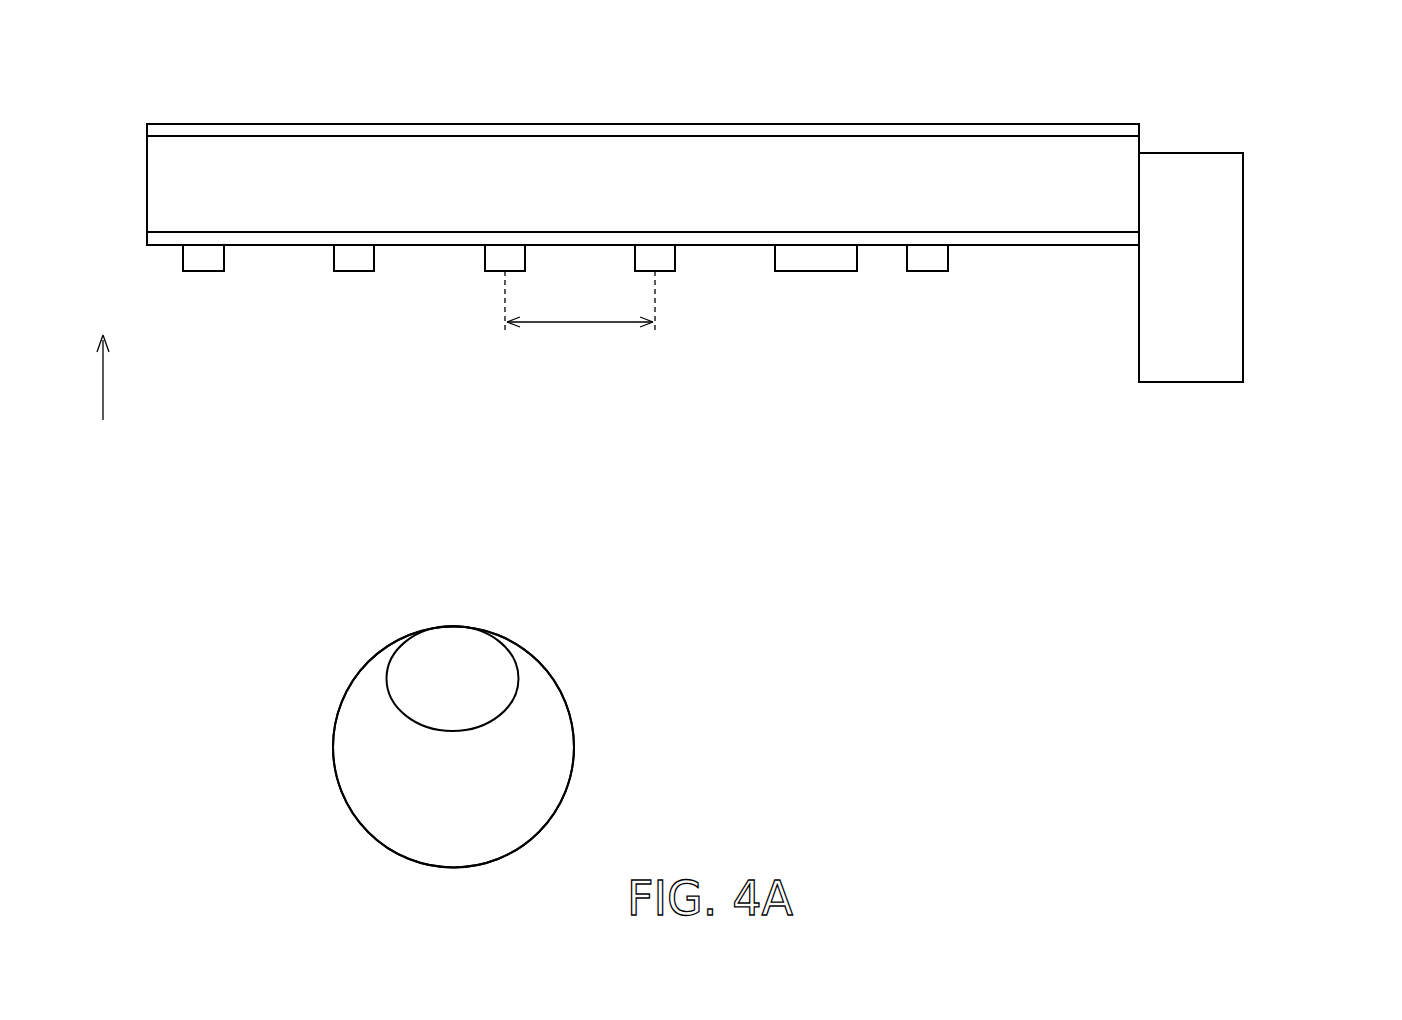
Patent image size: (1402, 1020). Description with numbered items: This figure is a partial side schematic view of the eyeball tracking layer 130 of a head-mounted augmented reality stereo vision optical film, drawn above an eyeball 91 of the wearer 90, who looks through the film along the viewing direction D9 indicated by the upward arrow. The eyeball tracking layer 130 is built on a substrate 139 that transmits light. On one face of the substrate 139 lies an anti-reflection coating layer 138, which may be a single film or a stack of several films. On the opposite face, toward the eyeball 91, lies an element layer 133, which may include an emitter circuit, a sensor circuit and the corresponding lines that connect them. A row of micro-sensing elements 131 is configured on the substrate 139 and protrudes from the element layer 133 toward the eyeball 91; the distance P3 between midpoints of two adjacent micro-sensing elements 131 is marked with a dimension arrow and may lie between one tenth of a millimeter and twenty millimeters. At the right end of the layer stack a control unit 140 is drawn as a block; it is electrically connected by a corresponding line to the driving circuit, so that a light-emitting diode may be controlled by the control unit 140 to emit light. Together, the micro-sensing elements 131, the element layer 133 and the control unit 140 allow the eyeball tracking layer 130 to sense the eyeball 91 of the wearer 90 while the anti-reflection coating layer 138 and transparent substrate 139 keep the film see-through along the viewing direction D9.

The eyeball tracking layer 130 is at (609, 195).
The micro-sensing elements 131 is at (203, 262).
The element layer 133 is at (157, 237).
The anti-reflection coating layer 138 is at (163, 128).
The substrate 139 is at (163, 183).
The control unit 140 is at (1243, 322).
The eyeball 91 is at (574, 745).
The wearer 90 is at (453, 747).
The distance between two adjacent micro-sensing elements P3 is at (580, 300).
The viewing direction D9 is at (100, 386).